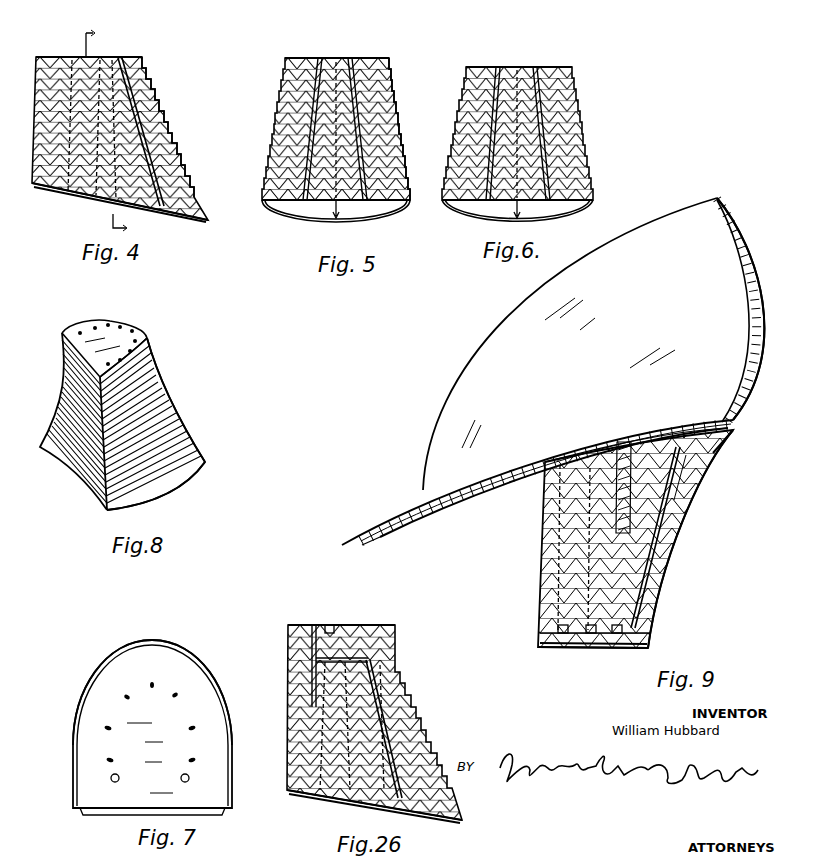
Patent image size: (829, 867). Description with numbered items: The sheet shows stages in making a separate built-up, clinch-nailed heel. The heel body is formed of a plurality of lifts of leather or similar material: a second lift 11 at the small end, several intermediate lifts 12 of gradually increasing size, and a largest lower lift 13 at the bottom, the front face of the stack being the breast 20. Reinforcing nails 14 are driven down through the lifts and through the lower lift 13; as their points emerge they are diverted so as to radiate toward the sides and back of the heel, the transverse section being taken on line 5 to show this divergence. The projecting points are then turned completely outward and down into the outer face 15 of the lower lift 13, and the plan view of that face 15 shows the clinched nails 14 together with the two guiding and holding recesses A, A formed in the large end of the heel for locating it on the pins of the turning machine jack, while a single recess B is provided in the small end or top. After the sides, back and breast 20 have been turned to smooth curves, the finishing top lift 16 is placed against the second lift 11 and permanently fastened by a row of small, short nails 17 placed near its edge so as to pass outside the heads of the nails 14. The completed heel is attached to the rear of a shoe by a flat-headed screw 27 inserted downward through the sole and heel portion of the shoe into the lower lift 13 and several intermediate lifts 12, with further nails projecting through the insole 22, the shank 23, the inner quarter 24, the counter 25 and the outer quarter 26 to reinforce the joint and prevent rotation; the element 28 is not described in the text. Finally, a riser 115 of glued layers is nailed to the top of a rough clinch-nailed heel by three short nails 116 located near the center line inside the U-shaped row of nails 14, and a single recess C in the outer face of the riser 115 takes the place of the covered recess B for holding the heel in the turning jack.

In FIG. 4, the second lift 11 is at (45, 55).
In FIG. 5, the second lift 11 is at (302, 57).
In FIG. 6, the second lift 11 is at (479, 66).
In FIG. 8, the second lift 11 is at (146, 354).
In FIG. 26, the second lift 11 is at (397, 660).
In FIG. 9, the second lift 11 is at (655, 622).
In FIG. 4, the intermediate lifts 12 is at (172, 124).
In FIG. 5, the intermediate lifts 12 is at (396, 97).
In FIG. 8, the intermediate lifts 12 is at (158, 398).
In FIG. 9, the intermediate lifts 12 is at (690, 505).
In FIG. 4, the lower lift 13 is at (208, 218).
In FIG. 5, the lower lift 13 is at (408, 201).
In FIG. 6, the lower lift 13 is at (452, 200).
In FIG. 8, the lower lift 13 is at (195, 471).
In FIG. 7, the lower lift 13 is at (150, 641).
In FIG. 26, the lower lift 13 is at (463, 810).
In FIG. 9, the lower lift 13 is at (727, 438).
In FIG. 4, the reinforcing nails 14 is at (122, 62).
In FIG. 5, the reinforcing nails 14 is at (305, 158).
In FIG. 6, the reinforcing nails 14 is at (548, 68).
In FIG. 7, the reinforcing nails 14 is at (179, 694).
In FIG. 26, the reinforcing nails 14 is at (428, 722).
In FIG. 9, the reinforcing nails 14 is at (676, 538).
In FIG. 4, the outer face of lower lift 15 is at (95, 196).
In FIG. 5, the outer face of lower lift 15 is at (326, 214).
In FIG. 6, the outer face of lower lift 15 is at (576, 211).
In FIG. 7, the outer face of lower lift 15 is at (151, 725).
In FIG. 26, the outer face of lower lift 15 is at (352, 796).
In FIG. 8, the top lift 16 is at (110, 335).
In FIG. 9, the top lift 16 is at (570, 640).
In FIG. 8, the small nails 17 is at (134, 330).
In FIG. 9, the small nails 17 is at (650, 640).
In FIG. 4, the breast 20 is at (35, 125).
In FIG. 5, the breast 20 is at (336, 129).
In FIG. 6, the breast 20 is at (517, 133).
In FIG. 8, the breast 20 is at (65, 385).
In FIG. 7, the breast 20 is at (114, 832).
In FIG. 26, the breast 20 is at (288, 705).
In FIG. 9, the breast 20 is at (540, 534).
In FIG. 9, the insole 22 is at (555, 457).
In FIG. 9, the shank 23 is at (592, 455).
In FIG. 9, the inner quarter 24 is at (737, 252).
In FIG. 9, the counter 25 is at (750, 284).
In FIG. 9, the outer quarter 26 is at (745, 226).
In FIG. 9, the flat-headed screw 27 is at (627, 440).
In FIG. 9, the heel attaching strip 28 is at (688, 444).
In FIG. 26, the riser 115 is at (397, 640).
In FIG. 26, the riser nails 116 is at (313, 625).
In FIG. 4, the section line 5- 5 is at (111, 132).
In FIG. 4, the guiding and holding recesses A is at (70, 194).
In FIG. 7, the guiding and holding recesses A is at (119, 779).
In FIG. 26, the guiding and holding recesses A is at (318, 792).
In FIG. 9, the guiding and holding recesses A is at (600, 455).
In FIG. 4, the guiding and holding recess B is at (96, 60).
In FIG. 5, the guiding and holding recess B is at (338, 58).
In FIG. 6, the guiding and holding recess B is at (519, 67).
In FIG. 26, the guiding and holding recess B is at (346, 660).
In FIG. 9, the guiding and holding recess B is at (606, 645).
In FIG. 26, the guiding and holding recess C is at (334, 627).